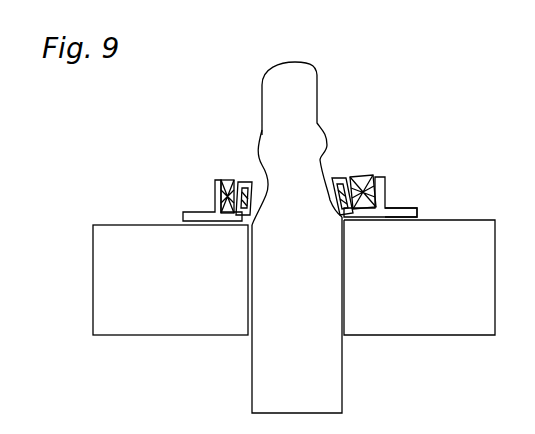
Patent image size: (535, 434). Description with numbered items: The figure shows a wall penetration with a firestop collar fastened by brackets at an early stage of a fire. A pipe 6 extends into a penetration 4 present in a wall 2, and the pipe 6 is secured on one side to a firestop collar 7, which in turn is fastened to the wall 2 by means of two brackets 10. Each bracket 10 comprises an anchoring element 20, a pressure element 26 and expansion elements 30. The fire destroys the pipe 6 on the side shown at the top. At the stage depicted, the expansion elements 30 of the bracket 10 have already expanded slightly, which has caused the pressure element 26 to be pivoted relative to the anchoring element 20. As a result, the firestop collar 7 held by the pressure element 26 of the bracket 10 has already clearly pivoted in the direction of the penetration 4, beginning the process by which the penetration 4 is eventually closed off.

The wall 2 is at (478, 240).
The penetration 4 is at (273, 298).
The pipe 6 is at (298, 82).
The firestop collar 7 is at (259, 170).
The bracket 10 is at (200, 178).
The anchoring element 20 is at (400, 194).
The pressure element 26 is at (340, 170).
The expansion element 30 is at (229, 178).